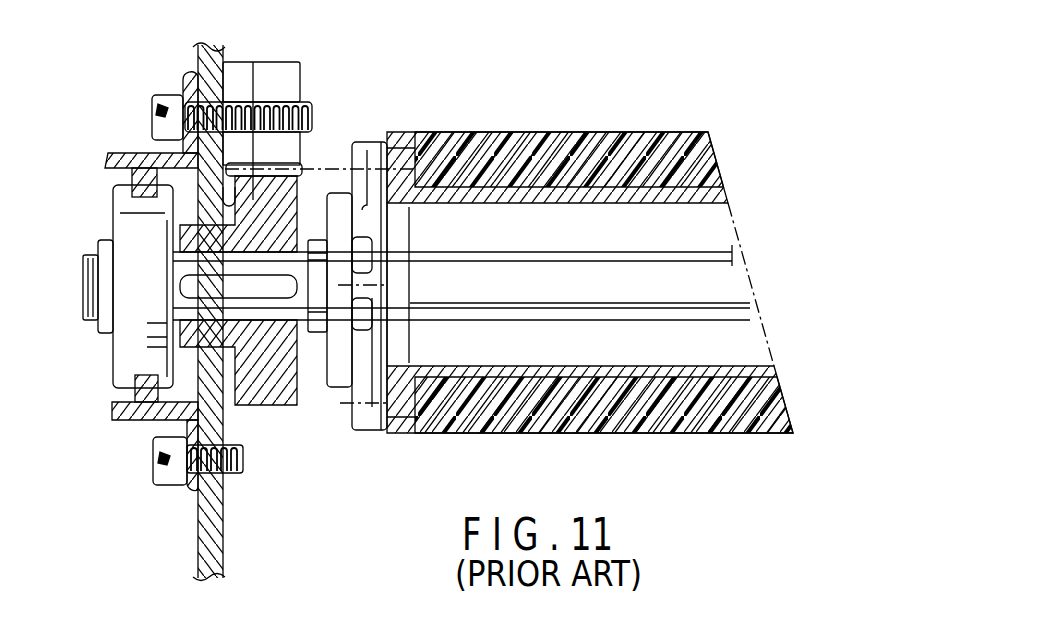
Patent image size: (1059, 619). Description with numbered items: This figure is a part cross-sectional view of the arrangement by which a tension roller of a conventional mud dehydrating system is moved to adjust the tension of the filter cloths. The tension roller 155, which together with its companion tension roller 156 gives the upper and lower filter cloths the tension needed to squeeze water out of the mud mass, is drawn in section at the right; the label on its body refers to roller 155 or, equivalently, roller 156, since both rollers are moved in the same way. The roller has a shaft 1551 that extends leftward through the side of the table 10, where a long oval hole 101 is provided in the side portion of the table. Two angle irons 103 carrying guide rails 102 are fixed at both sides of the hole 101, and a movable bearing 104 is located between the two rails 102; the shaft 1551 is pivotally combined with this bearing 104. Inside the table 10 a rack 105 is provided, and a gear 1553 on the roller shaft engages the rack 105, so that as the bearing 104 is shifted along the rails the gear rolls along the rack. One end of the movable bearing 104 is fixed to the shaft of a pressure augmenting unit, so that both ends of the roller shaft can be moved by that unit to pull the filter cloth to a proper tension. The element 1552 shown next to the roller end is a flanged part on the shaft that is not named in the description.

The table 10 is at (221, 549).
The long oval hole 101 is at (253, 76).
The guide rail 102 is at (138, 184).
The angle iron 103 is at (150, 155).
The movable bearing 104 is at (128, 306).
The rack 105 is at (290, 149).
The tension roller 155 is at (642, 441).
The tension roller 156 is at (665, 122).
The shaft 1551 is at (693, 288).
The flange 1552 is at (363, 414).
The gear 1553 is at (267, 376).